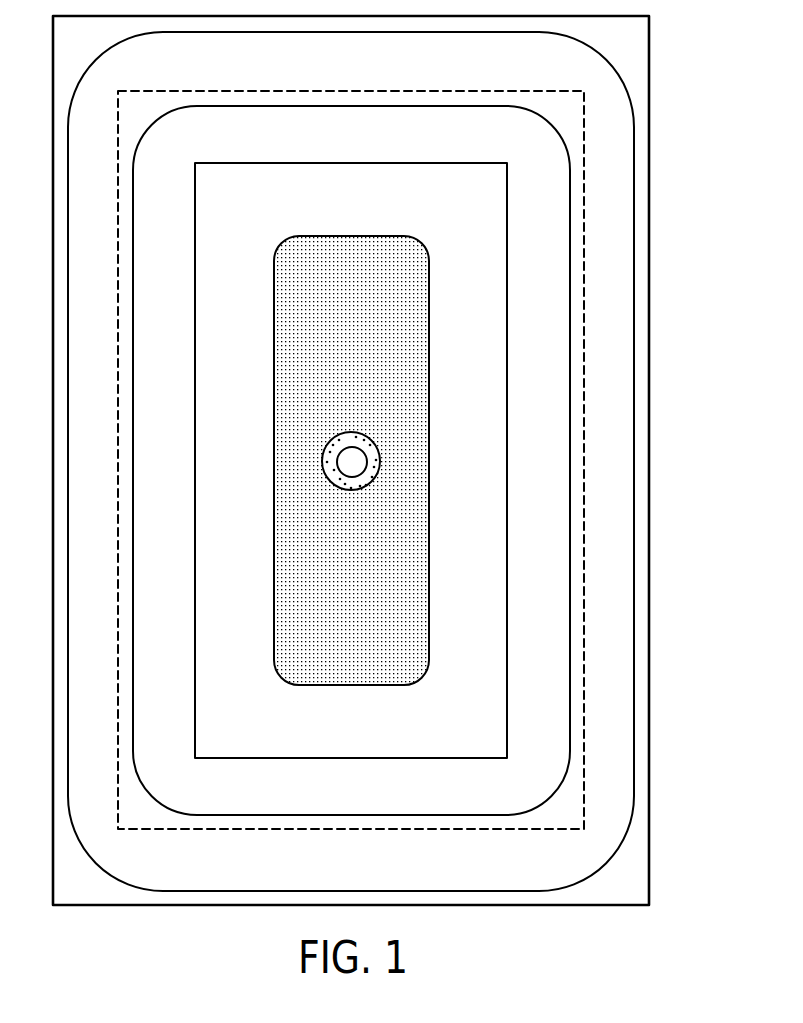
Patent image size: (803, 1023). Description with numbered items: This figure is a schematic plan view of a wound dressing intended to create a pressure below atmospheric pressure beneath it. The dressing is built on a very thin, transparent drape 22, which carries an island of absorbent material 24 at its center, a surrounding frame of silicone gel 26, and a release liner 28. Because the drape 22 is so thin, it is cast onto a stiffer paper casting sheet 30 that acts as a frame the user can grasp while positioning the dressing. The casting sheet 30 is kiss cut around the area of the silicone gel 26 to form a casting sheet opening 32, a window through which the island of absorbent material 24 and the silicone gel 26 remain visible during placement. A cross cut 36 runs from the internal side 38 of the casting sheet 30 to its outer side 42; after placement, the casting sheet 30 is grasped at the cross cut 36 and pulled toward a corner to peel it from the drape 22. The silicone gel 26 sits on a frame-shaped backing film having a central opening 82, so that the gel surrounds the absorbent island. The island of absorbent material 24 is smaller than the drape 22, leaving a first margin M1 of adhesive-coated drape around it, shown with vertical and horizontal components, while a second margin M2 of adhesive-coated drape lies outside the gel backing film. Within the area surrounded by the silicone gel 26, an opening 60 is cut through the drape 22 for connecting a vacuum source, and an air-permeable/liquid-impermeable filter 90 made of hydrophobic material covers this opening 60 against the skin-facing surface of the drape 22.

The drape 22 is at (488, 733).
The island of absorbent material 24 is at (420, 583).
The silicone gel 26 is at (533, 528).
The release liner 28 is at (630, 877).
The casting sheet 30 is at (615, 492).
The casting sheet opening 32 is at (572, 477).
The cross cut 36 is at (572, 425).
The internal side 38 is at (570, 380).
The outer side 42 is at (635, 303).
The opening 60 is at (356, 458).
The central opening 82 is at (196, 690).
The air-permeable/liquid-impermeable filter 90 is at (368, 463).
The first margin M1 is at (392, 33).
The second margin M2 is at (185, 33).